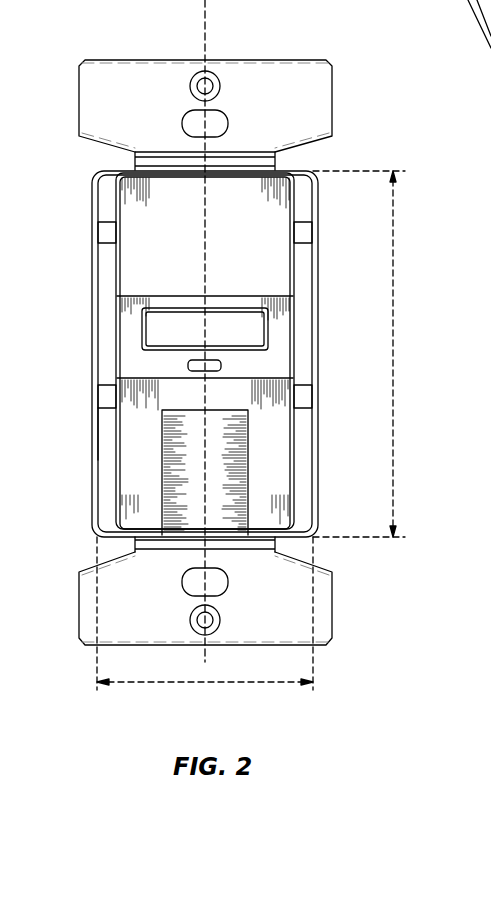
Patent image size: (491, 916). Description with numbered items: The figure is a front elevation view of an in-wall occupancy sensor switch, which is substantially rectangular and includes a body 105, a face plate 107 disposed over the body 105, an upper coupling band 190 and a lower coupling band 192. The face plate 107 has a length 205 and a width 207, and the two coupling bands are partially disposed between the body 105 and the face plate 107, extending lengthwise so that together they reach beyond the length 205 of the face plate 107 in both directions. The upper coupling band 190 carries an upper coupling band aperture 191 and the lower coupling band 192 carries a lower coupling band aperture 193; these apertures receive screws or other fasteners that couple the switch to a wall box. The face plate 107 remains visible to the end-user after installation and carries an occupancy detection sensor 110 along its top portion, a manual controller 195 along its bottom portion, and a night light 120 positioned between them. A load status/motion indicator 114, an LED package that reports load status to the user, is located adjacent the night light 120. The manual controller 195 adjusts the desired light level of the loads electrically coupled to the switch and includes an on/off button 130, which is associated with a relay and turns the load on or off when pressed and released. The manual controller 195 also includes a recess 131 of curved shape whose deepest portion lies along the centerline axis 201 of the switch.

The body 105 is at (466, 3).
The face plate 107 is at (130, 390).
The occupancy detection sensor 110 is at (177, 247).
The load status/motion indicator 114 is at (222, 366).
The night light 120 is at (160, 322).
The on/off button 130 is at (132, 490).
The recess 131 is at (220, 490).
The upper coupling band 190 is at (310, 78).
The upper coupling band aperture 191 is at (190, 86).
The lower coupling band 192 is at (333, 606).
The lower coupling band aperture 193 is at (190, 622).
The manual controller 195 is at (112, 434).
The centerline axis 201 is at (205, 45).
The length 205 is at (393, 340).
The width 207 is at (205, 684).